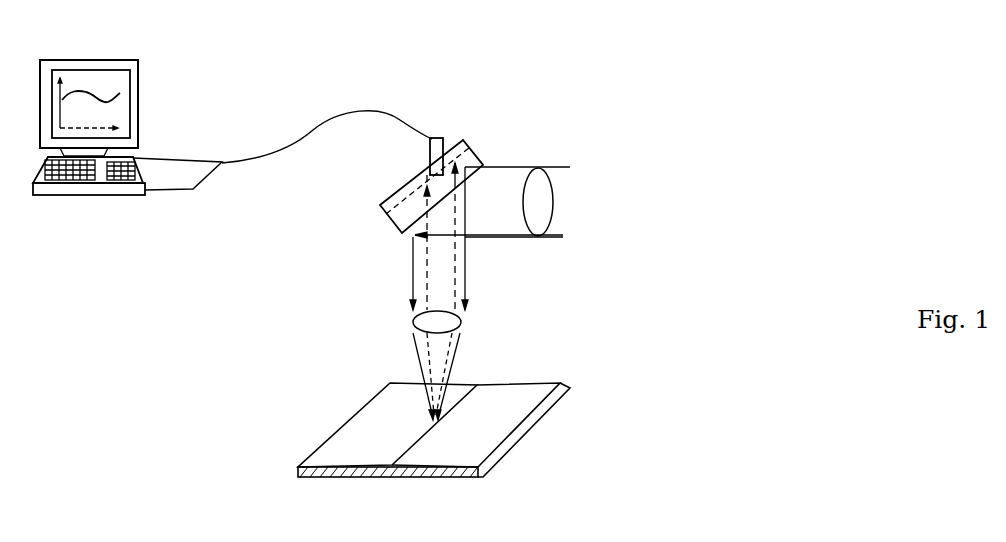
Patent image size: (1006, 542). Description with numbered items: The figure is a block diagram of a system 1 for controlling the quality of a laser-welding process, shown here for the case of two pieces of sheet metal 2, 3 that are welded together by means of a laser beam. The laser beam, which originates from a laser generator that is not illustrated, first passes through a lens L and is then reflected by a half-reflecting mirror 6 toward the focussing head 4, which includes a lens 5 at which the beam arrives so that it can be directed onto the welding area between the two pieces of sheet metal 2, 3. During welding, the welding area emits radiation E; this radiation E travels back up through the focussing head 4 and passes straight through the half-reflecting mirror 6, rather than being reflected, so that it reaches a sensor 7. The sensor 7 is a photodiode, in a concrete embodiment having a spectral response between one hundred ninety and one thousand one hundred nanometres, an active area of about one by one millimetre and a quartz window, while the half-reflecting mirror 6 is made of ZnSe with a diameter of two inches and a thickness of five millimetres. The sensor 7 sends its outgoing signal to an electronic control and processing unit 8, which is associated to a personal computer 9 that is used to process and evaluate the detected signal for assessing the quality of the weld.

The system for controlling the quality of a laser-welding process 1 is at (618, 123).
The piece of sheet metal 2 is at (342, 444).
The piece of sheet metal 3 is at (492, 437).
The focussing head 4 is at (486, 269).
The lens 5 is at (462, 328).
The half-reflecting mirror 6 is at (384, 231).
The sensor 7 is at (447, 133).
The electronic control and processing unit 8 is at (204, 158).
The personal computer 9 is at (148, 85).
The lens L is at (548, 191).
The radiation emitted by the welding area E is at (426, 283).